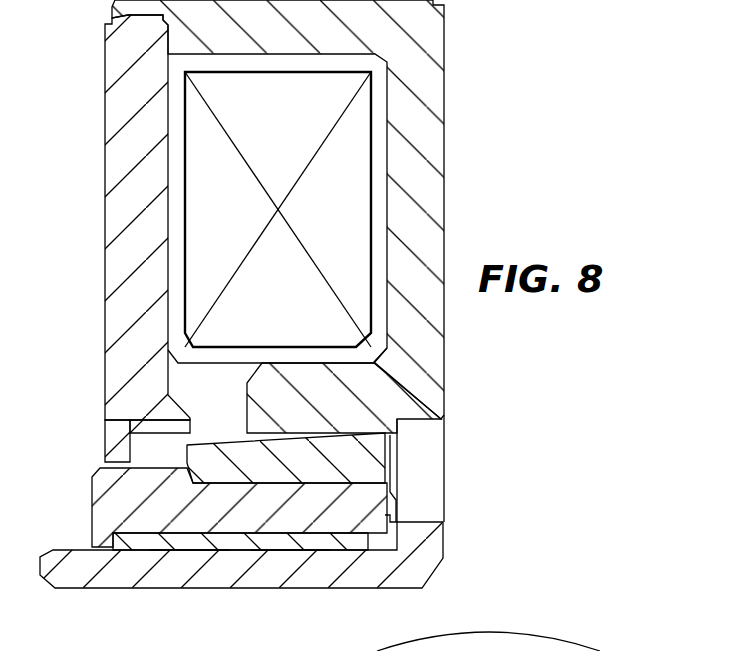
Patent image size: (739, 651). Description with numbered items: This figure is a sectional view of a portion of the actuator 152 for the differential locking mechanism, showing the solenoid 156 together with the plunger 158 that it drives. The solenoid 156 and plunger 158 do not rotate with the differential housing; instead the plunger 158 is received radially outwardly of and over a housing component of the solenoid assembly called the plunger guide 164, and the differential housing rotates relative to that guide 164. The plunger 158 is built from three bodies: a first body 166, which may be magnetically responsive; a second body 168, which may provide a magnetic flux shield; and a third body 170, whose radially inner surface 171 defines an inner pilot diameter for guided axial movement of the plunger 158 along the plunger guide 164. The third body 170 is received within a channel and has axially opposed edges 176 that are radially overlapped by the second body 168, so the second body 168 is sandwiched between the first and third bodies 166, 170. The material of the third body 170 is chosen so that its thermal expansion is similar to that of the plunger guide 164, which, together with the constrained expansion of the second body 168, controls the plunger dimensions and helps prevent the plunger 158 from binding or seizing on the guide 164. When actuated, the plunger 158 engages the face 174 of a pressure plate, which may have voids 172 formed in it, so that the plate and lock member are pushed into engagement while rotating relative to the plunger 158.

The actuator 152 is at (468, 160).
The solenoid 156 is at (430, 64).
The plunger 158 is at (410, 453).
The plunger guide 164 is at (108, 575).
The first body 166 is at (352, 440).
The second body 168 is at (386, 500).
The third body 170 is at (290, 552).
The radially inner surface 171 is at (190, 552).
The voids 172 is at (531, 637).
The face 174 is at (154, 543).
The axially opposed edges 176 is at (95, 547).